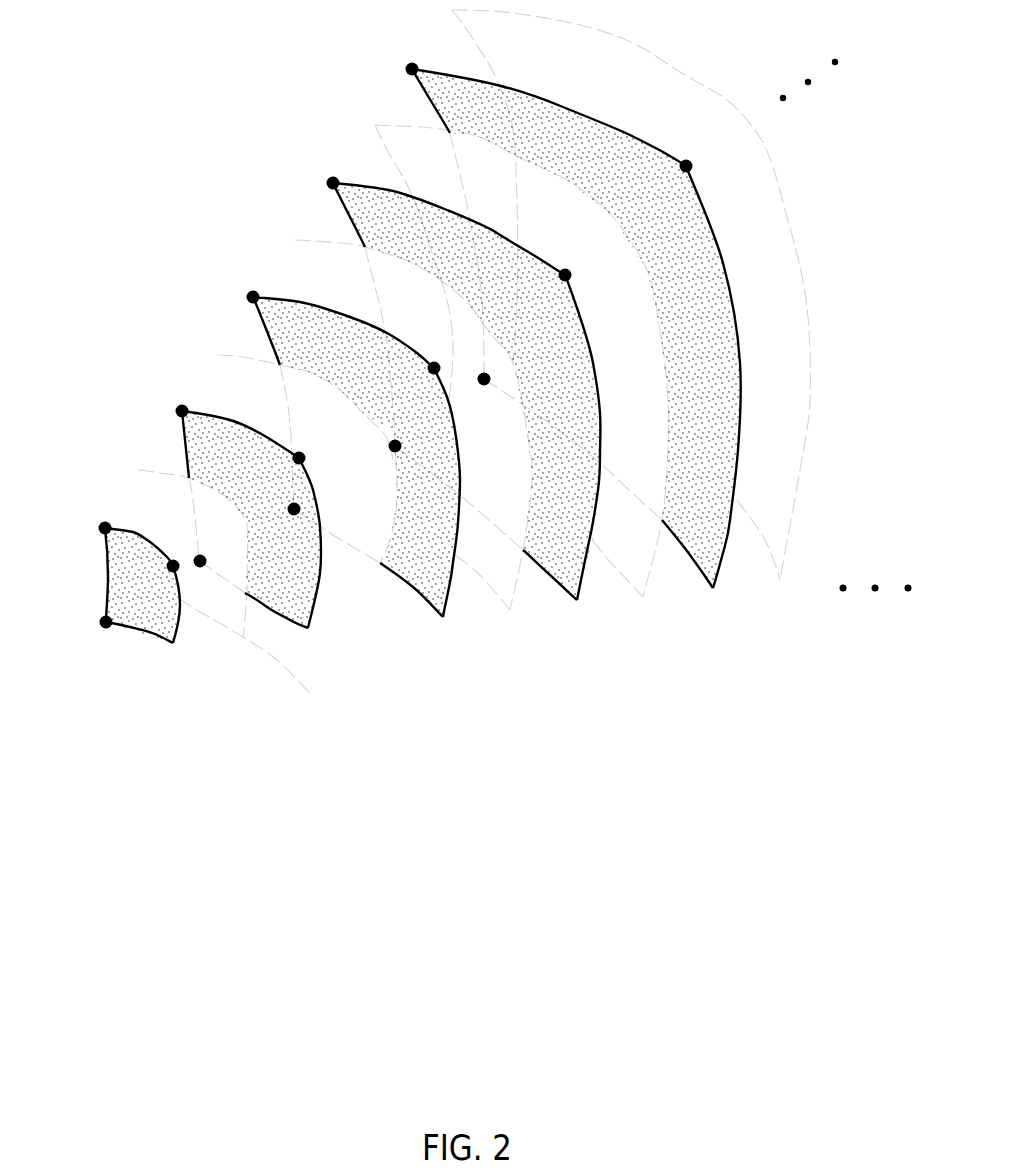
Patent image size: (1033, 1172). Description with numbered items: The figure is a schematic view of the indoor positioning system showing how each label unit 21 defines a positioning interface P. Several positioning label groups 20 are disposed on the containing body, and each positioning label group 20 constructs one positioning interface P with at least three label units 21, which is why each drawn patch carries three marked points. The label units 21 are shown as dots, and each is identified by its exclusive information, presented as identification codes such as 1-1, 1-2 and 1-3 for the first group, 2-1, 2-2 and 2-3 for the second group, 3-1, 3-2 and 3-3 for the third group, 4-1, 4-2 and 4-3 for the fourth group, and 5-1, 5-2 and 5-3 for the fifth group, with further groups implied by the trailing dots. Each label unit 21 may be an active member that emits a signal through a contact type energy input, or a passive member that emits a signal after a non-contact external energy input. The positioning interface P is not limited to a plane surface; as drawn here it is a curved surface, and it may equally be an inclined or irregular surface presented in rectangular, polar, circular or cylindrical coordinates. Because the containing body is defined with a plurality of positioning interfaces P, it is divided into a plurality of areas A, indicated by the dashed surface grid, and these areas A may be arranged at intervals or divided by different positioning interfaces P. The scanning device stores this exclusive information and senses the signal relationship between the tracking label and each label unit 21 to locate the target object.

The exclusive information of label unit 1-1 is at (117, 638).
The exclusive information of label unit 1-2 is at (100, 513).
The exclusive information of label unit 1-3 is at (173, 547).
The exclusive information of label unit 2-1 is at (216, 548).
The exclusive information of label unit 2-2 is at (174, 395).
The exclusive information of label unit 2-3 is at (317, 444).
The exclusive information of label unit 3-1 is at (320, 500).
The exclusive information of label unit 3-2 is at (245, 283).
The exclusive information of label unit 3-3 is at (436, 352).
The exclusive information of label unit 4-1 is at (416, 439).
The exclusive information of label unit 4-2 is at (328, 168).
The exclusive information of label unit 4-3 is at (564, 258).
The exclusive information of label unit 5-1 is at (481, 396).
The exclusive information of label unit 5-2 is at (412, 55).
The exclusive information of label unit 5-3 is at (702, 150).
The positioning label group 20 is at (103, 680).
The label unit 21 is at (121, 605).
The area A is at (322, 722).
The positioning interface P is at (418, 456).